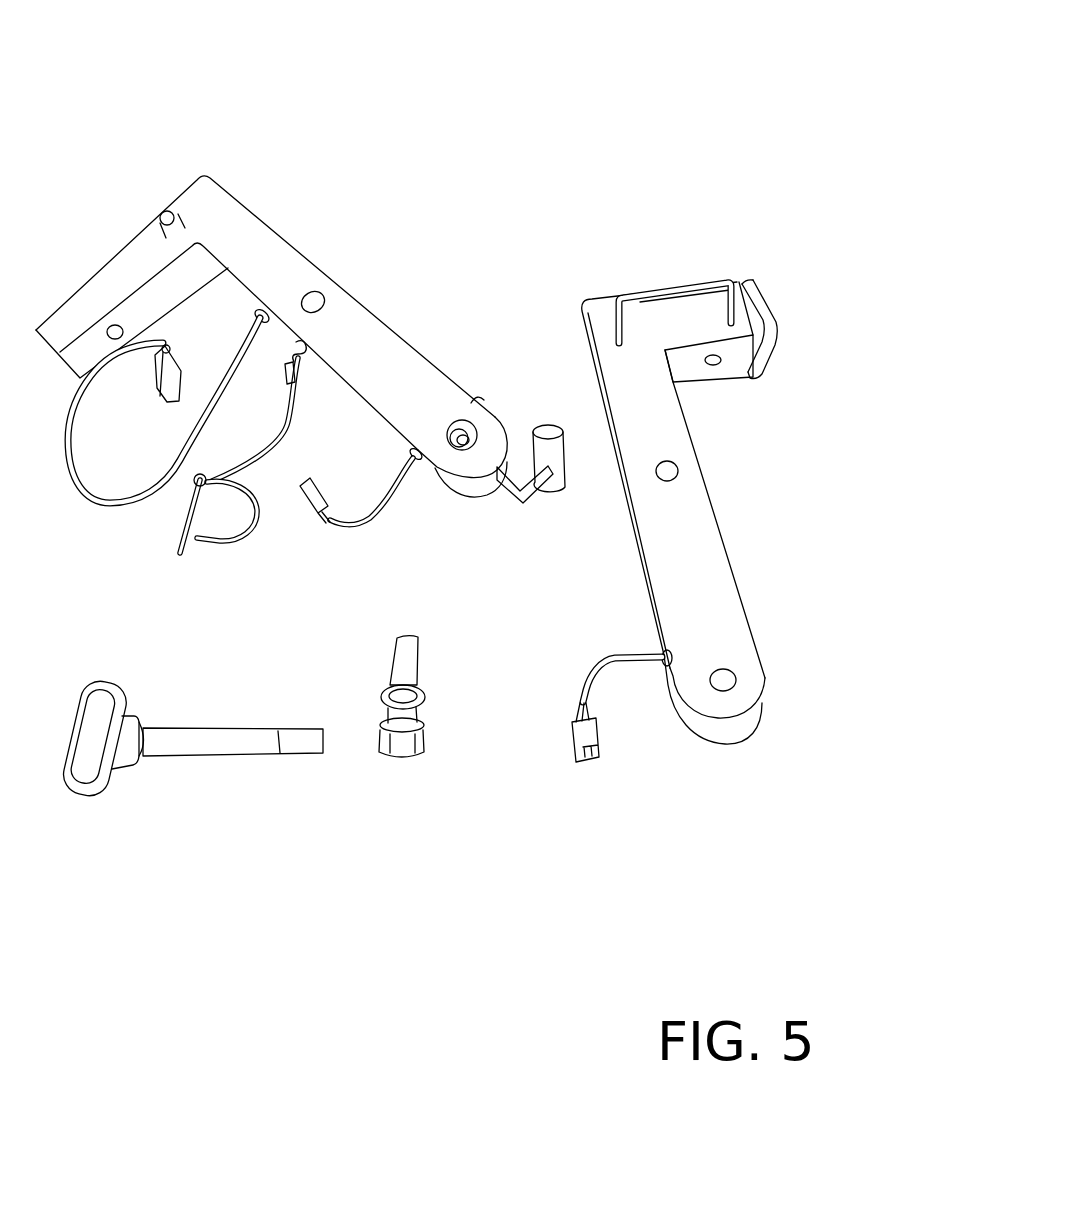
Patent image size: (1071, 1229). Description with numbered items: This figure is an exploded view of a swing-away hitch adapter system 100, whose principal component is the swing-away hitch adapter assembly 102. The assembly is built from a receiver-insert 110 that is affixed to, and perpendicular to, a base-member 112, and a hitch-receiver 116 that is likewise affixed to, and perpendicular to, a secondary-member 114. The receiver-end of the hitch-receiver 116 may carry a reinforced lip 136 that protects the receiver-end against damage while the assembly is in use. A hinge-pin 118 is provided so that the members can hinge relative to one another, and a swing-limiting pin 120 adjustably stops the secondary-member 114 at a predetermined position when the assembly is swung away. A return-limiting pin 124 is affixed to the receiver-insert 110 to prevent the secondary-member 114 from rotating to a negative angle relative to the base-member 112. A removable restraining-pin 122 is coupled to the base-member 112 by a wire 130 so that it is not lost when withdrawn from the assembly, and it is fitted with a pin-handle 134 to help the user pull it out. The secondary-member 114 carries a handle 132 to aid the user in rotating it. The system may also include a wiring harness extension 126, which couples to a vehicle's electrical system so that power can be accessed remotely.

The swing-away hitch adapter system 100 is at (603, 90).
The swing-away hitch adapter assembly 102 is at (640, 123).
The receiver-insert 110 is at (152, 255).
The base-member 112 is at (279, 271).
The secondary-member 114 is at (709, 576).
The hitch-receiver 116 is at (692, 330).
The hinge-pin 118 is at (404, 755).
The swing-limiting pin 120 is at (548, 440).
The restraining-pin 122 is at (187, 744).
The return-limiting pin 124 is at (167, 210).
The wiring harness extension 126 is at (112, 500).
The wire 130 is at (294, 426).
The handle 132 is at (631, 296).
The pin-handle 134 is at (97, 792).
The reinforced lip 136 is at (750, 280).